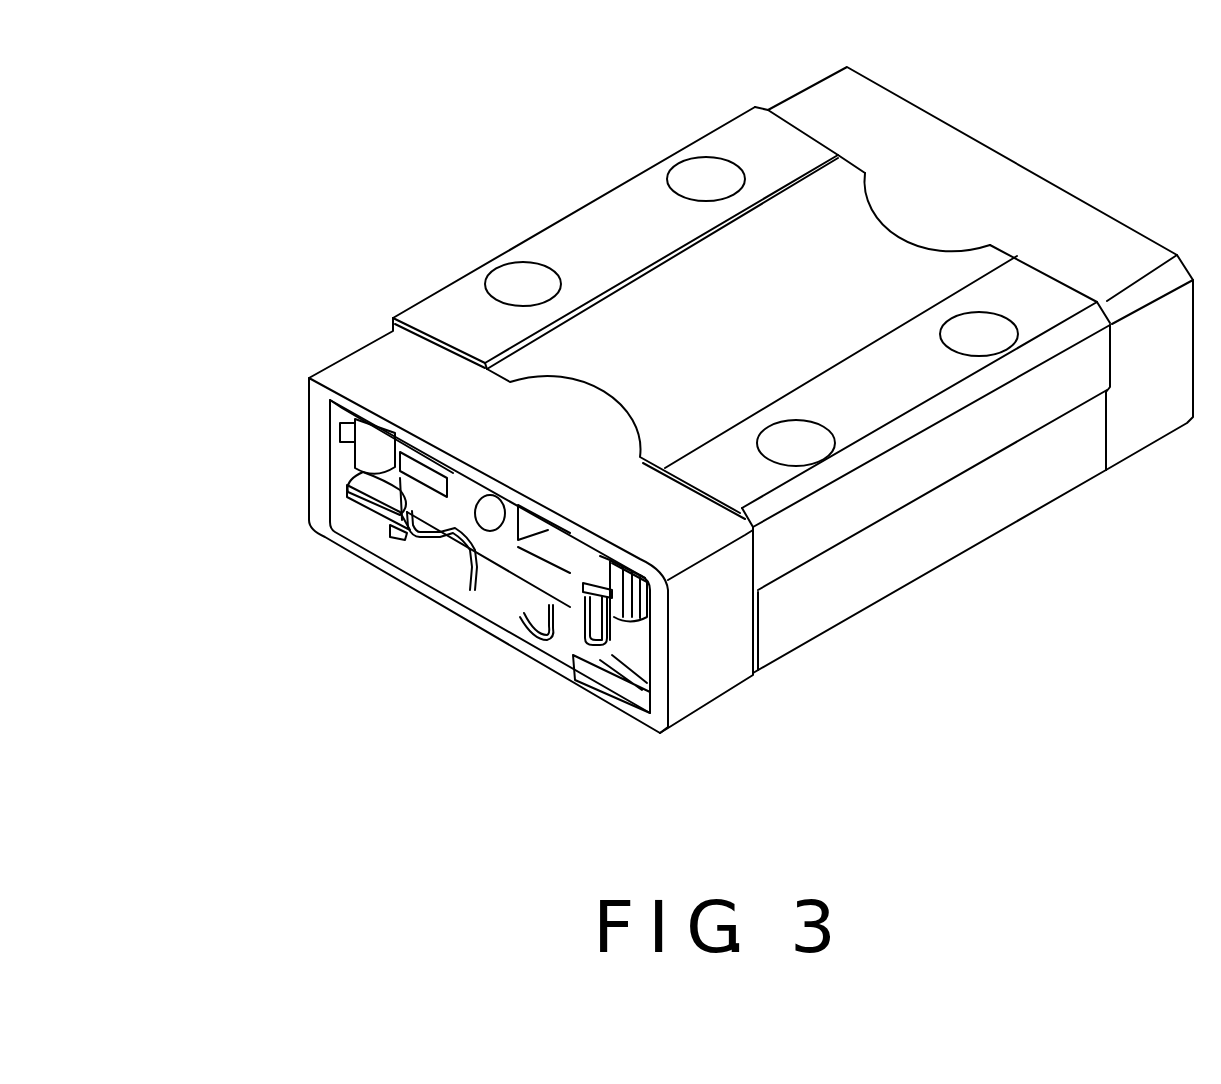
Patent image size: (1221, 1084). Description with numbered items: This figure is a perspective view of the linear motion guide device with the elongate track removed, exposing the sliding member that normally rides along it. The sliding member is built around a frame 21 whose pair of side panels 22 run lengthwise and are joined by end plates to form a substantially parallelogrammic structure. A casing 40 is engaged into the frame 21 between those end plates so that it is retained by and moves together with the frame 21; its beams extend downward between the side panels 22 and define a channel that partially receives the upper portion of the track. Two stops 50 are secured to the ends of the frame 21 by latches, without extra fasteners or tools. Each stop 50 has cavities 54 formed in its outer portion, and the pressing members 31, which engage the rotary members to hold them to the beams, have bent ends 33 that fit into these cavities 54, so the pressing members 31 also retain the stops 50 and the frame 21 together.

The frame 21 is at (1017, 518).
The side panels 22 is at (897, 575).
The pressing members 31 is at (470, 578).
The bent ends 33 is at (403, 580).
The casing 40 is at (605, 225).
The stops 50 is at (980, 190).
The cavities 54 is at (343, 543).